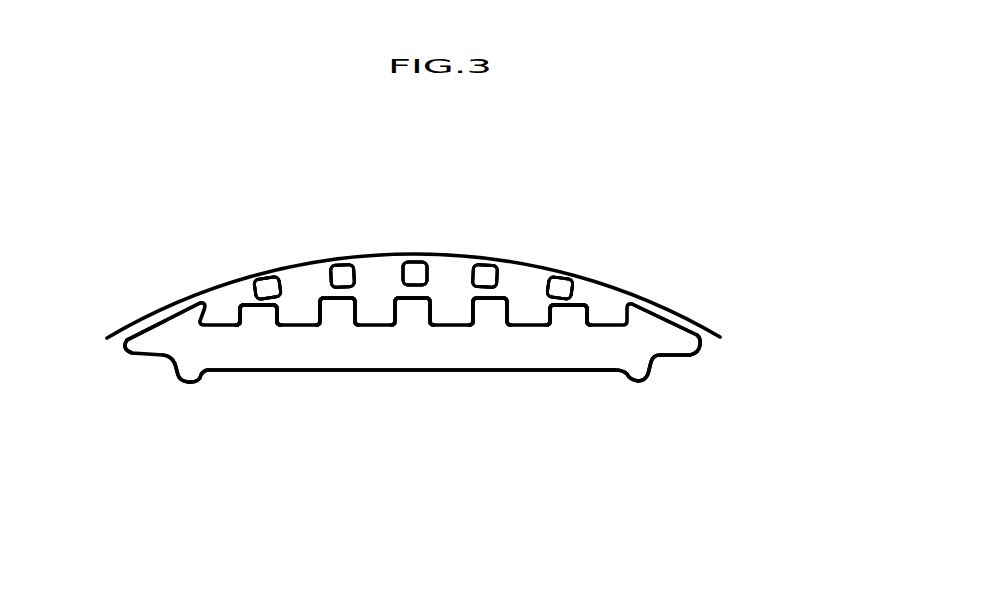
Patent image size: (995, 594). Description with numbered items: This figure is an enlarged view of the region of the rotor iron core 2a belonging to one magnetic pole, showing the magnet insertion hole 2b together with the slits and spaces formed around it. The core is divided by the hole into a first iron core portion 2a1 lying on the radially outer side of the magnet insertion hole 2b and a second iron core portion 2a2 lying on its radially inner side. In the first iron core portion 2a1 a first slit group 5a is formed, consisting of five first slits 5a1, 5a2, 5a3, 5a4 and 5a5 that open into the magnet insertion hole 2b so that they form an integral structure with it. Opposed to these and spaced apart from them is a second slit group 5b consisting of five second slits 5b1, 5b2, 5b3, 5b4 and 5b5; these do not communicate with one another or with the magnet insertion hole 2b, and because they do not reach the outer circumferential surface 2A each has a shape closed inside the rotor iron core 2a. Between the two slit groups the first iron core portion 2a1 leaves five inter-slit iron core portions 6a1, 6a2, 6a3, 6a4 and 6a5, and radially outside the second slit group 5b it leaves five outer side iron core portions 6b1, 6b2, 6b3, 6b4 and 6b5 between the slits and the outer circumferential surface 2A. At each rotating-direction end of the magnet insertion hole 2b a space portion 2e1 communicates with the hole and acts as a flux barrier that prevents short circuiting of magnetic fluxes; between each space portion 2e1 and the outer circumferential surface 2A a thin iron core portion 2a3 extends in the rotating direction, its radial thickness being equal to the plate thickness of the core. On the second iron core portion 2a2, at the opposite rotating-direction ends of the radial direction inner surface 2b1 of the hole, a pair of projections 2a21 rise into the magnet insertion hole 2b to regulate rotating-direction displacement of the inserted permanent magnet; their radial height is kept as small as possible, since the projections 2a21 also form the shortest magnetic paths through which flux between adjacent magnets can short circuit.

The rotor iron core 2a is at (647, 145).
The outer circumferential surface 2A is at (607, 287).
The first iron core portion 2a1 is at (222, 304).
The thin iron core portion 2a3 is at (160, 314).
The space portion 2e1 is at (147, 338).
The projection 2a21 is at (160, 367).
The magnet insertion hole 2b is at (603, 348).
The radial direction inner surface 2b1 is at (593, 368).
The second iron core portion 2a2 is at (605, 398).
The second slit group 5b is at (235, 163).
The second slit 5b1 is at (271, 278).
The second slit 5b2 is at (345, 264).
The second slit 5b3 is at (420, 260).
The second slit 5b4 is at (488, 263).
The second slit 5b5 is at (563, 277).
The outer side iron core portion 6b1 is at (272, 281).
The outer side iron core portion 6b2 is at (340, 266).
The outer side iron core portion 6b3 is at (413, 262).
The outer side iron core portion 6b4 is at (483, 265).
The outer side iron core portion 6b5 is at (553, 277).
The first slit group 5a is at (213, 475).
The first slit 5a1 is at (258, 318).
The first slit 5a2 is at (336, 318).
The first slit 5a3 is at (413, 318).
The first slit 5a4 is at (493, 317).
The first slit 5a5 is at (568, 317).
The inter-slit iron core portion 6a1 is at (257, 297).
The inter-slit iron core portion 6a2 is at (330, 292).
The inter-slit iron core portion 6a3 is at (407, 292).
The inter-slit iron core portion 6a4 is at (483, 292).
The inter-slit iron core portion 6a5 is at (560, 300).